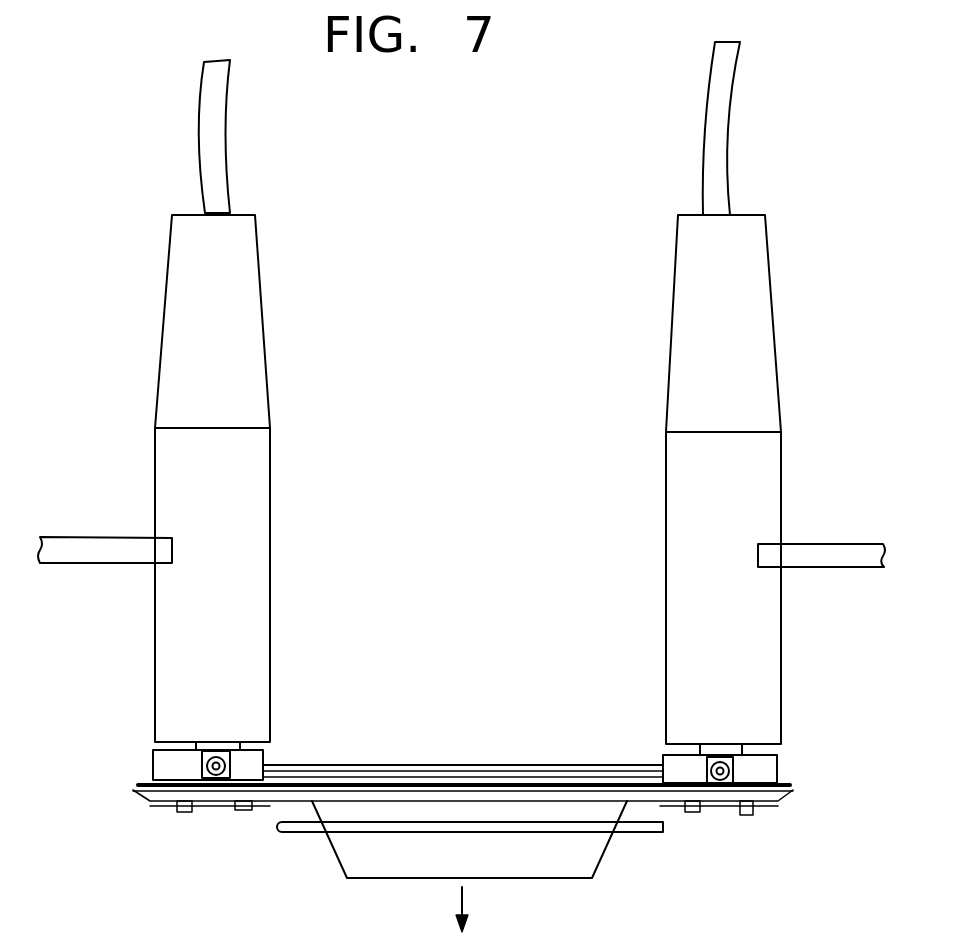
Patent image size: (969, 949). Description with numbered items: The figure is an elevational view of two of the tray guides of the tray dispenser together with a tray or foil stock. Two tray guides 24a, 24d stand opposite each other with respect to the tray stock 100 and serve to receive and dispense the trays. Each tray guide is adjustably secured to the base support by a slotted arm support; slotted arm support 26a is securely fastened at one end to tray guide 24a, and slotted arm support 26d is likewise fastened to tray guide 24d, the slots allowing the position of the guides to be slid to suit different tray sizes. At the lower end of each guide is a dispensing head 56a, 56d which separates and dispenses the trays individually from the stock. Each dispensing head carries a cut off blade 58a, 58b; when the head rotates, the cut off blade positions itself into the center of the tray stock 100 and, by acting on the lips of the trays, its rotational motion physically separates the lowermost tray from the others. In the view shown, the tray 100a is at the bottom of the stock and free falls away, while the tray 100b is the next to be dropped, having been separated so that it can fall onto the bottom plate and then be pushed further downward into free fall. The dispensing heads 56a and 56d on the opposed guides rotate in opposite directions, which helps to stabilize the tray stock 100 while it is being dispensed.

The tray guide 24a is at (183, 658).
The tray guide 24d is at (692, 585).
The slotted arm support 26a is at (84, 553).
The slotted arm support 26d is at (838, 560).
The dispensing head 56a is at (170, 766).
The dispensing head 56d is at (765, 770).
The cut off blade 58a is at (170, 790).
The cut off blade 58b is at (725, 790).
The tray stock 100 is at (462, 742).
The tray 100a is at (542, 865).
The tray 100b is at (333, 810).